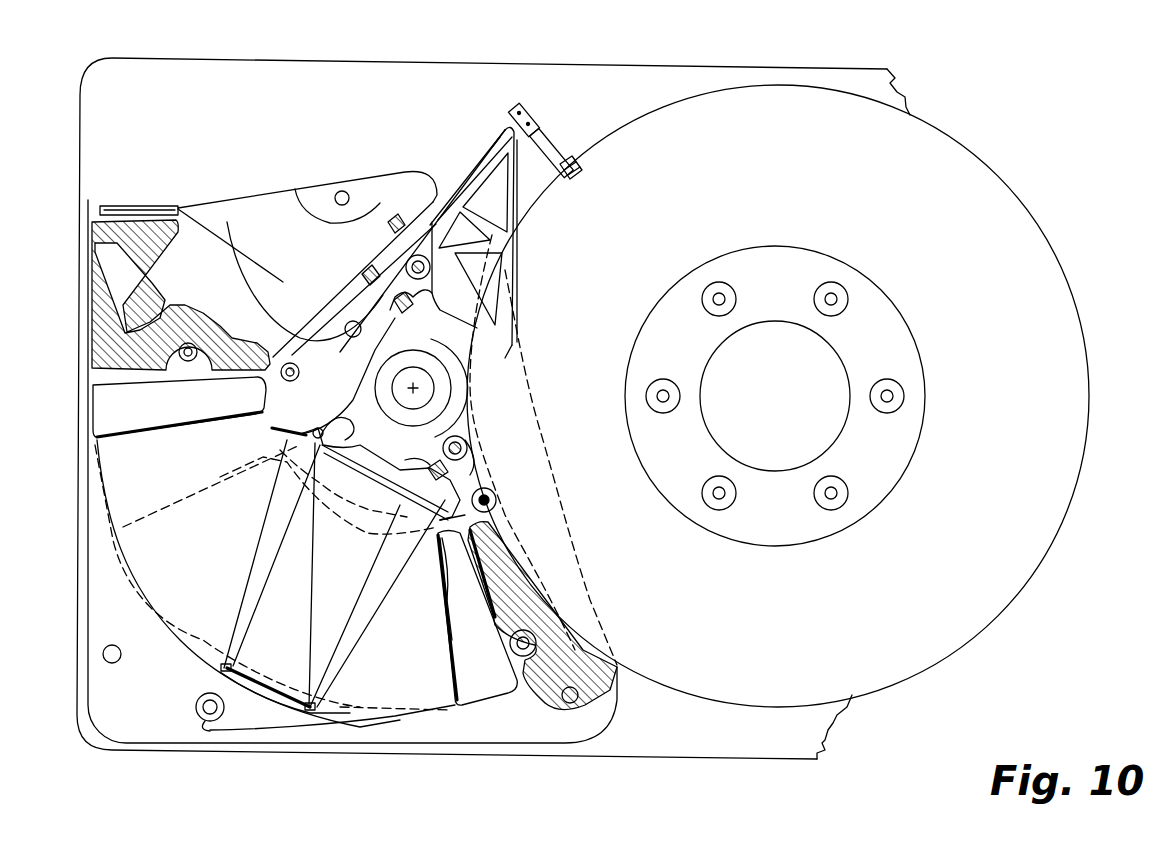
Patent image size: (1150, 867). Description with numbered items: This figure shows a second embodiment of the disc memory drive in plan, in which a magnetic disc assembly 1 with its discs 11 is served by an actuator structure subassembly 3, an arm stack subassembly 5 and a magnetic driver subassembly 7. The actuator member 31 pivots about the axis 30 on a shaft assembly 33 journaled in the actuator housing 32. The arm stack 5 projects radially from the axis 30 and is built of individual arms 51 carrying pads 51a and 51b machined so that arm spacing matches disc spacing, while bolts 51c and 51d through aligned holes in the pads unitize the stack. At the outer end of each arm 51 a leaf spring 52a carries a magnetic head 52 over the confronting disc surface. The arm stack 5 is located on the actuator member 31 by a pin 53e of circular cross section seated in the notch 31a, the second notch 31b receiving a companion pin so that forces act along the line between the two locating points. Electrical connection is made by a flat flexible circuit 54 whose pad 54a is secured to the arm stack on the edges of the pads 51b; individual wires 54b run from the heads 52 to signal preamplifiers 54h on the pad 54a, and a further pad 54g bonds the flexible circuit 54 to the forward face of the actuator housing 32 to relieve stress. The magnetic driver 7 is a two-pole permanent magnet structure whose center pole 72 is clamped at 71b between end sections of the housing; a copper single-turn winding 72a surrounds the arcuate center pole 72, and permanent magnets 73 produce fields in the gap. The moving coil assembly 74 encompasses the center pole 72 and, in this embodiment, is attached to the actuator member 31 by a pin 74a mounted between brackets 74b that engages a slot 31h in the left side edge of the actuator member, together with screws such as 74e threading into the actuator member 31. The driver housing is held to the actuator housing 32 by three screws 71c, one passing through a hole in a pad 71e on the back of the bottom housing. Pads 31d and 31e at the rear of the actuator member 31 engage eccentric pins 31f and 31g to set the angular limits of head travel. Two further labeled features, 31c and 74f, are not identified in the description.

The magnetic disc assembly 1 is at (612, 126).
The discs 11 is at (698, 124).
The actuator structure subassembly 3 is at (440, 370).
The axis 30 is at (420, 388).
The actuator member 31 is at (372, 366).
The notch 31a is at (455, 468).
The second notch 31b is at (422, 301).
The lever pivot 31c is at (366, 338).
The pad 31d is at (268, 430).
The pad 31e is at (452, 516).
The eccentric pin 31f is at (277, 378).
The eccentric pin 31g is at (500, 500).
The slot 31h is at (338, 420).
The actuator housing 32 is at (217, 308).
The shaft assembly 33 is at (440, 398).
The arm stack subassembly 5 is at (522, 243).
The arm 51 is at (524, 228).
The pad 51a is at (475, 456).
The pad 51b is at (372, 280).
The bolt 51c is at (470, 447).
The bolt 51d is at (434, 267).
The magnetic head 52 is at (590, 170).
The leaf spring 52a is at (562, 145).
The pin 53e is at (440, 485).
The flat flexible circuit 54 is at (260, 270).
The pad 54a is at (372, 288).
The individual wires 54b is at (490, 140).
The pad 54g is at (145, 207).
The signal preamplifiers 54h is at (403, 220).
The magnetic driver subassembly 7 is at (468, 580).
The clamp location 71b is at (158, 412).
The screws 71c is at (195, 340).
The pad 71e is at (190, 712).
The center pole 72 is at (398, 718).
The copper plate single turn winding 72a is at (442, 712).
The permanent magnets 73 is at (170, 613).
The coil assembly 74 is at (283, 703).
The pin 74a is at (312, 450).
The brackets 74b is at (278, 450).
The screw 74e is at (445, 590).
The guide spring 74f is at (232, 218).